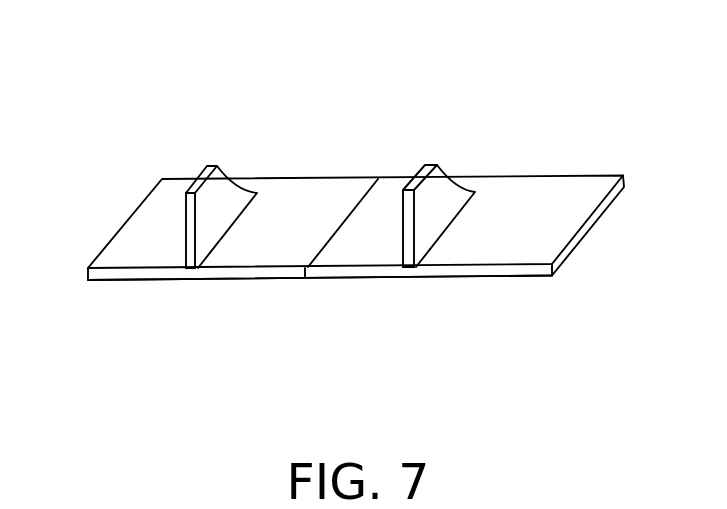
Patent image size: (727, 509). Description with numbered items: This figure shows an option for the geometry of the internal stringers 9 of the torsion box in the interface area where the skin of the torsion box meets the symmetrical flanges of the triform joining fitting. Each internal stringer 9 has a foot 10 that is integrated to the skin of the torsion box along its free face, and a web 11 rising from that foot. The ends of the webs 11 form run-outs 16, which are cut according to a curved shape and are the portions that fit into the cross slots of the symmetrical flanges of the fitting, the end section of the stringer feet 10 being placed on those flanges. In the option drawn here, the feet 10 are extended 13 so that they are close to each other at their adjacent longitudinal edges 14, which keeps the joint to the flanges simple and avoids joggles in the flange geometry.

The internal stringer 9 is at (235, 273).
The foot of the internal stringer 10 is at (123, 250).
The web of the internal stringer 11 is at (200, 228).
The extension of the stringer feet 13 is at (401, 118).
The longitudinal edge of the stringer foot 14 is at (145, 198).
The run-out of the web 16 is at (237, 188).